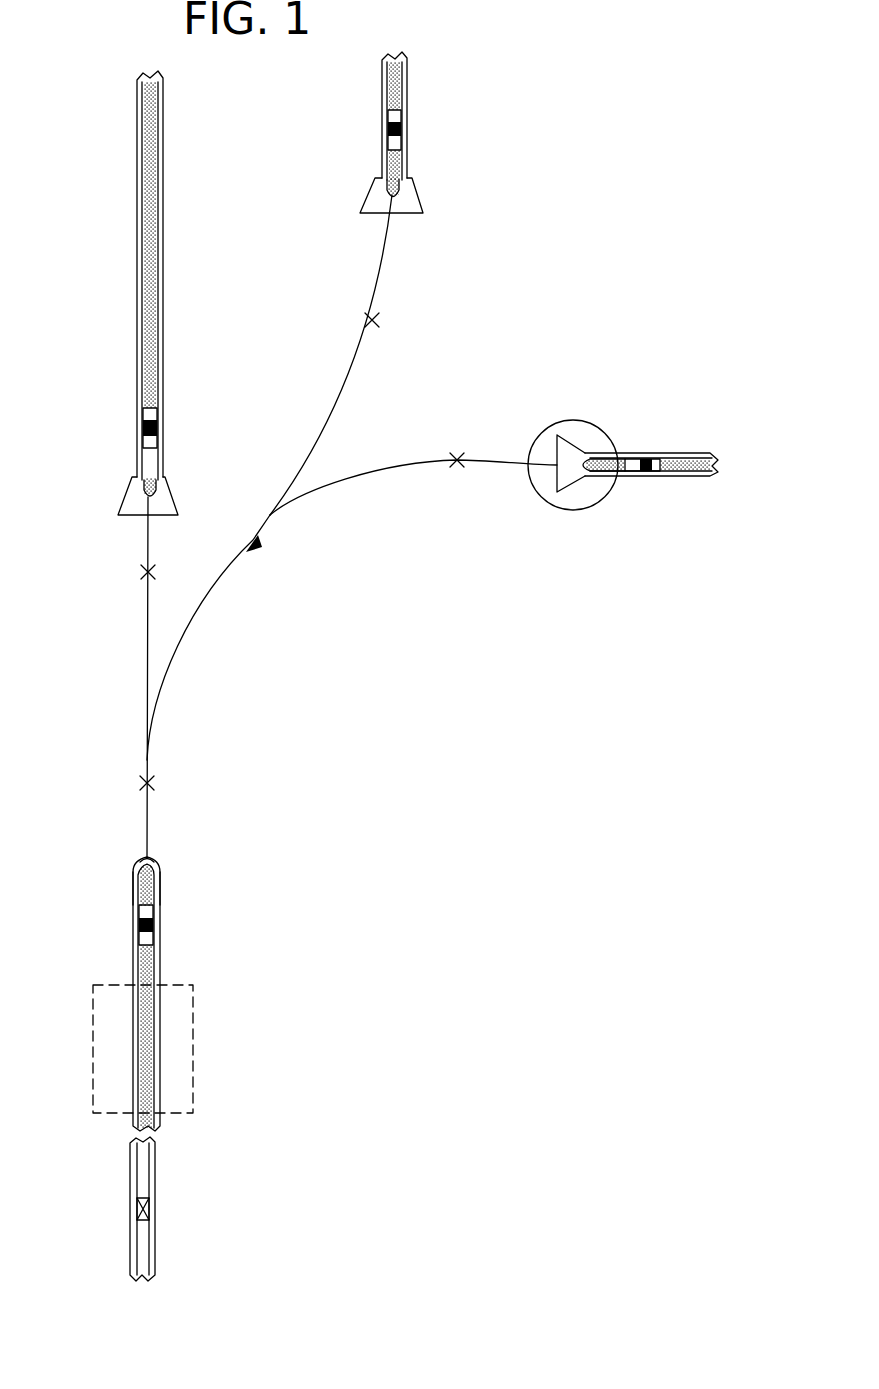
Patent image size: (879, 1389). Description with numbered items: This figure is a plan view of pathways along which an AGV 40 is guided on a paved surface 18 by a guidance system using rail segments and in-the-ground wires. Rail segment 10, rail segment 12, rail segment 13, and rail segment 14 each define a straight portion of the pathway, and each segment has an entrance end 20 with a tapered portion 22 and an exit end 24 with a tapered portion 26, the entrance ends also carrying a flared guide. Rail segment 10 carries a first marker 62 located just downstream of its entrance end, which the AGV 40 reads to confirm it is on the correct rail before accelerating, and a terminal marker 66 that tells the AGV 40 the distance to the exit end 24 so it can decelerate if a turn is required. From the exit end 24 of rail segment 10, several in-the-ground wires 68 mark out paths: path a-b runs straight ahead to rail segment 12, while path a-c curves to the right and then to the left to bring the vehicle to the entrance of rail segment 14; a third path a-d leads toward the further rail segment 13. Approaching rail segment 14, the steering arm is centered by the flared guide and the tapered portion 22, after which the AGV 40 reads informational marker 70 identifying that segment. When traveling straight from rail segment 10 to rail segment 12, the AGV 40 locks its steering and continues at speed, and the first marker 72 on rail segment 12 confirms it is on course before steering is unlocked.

The rail segment 10 is at (168, 960).
The rail segment 12 is at (180, 226).
The second tubular member 13 is at (430, 115).
The rail segment 14 is at (678, 498).
The paved surface 18 is at (478, 794).
The entrance end 20 is at (108, 483).
The tapered portion 22 is at (133, 497).
The exit end 24 is at (128, 870).
The tapered portion 26 is at (143, 858).
The AGV 40 is at (170, 1043).
The first marker 62 is at (152, 1210).
The terminal marker 66 is at (153, 927).
The in-the-ground wires 68 is at (145, 598).
The informational marker 70 is at (645, 478).
The first marker 72 is at (160, 426).